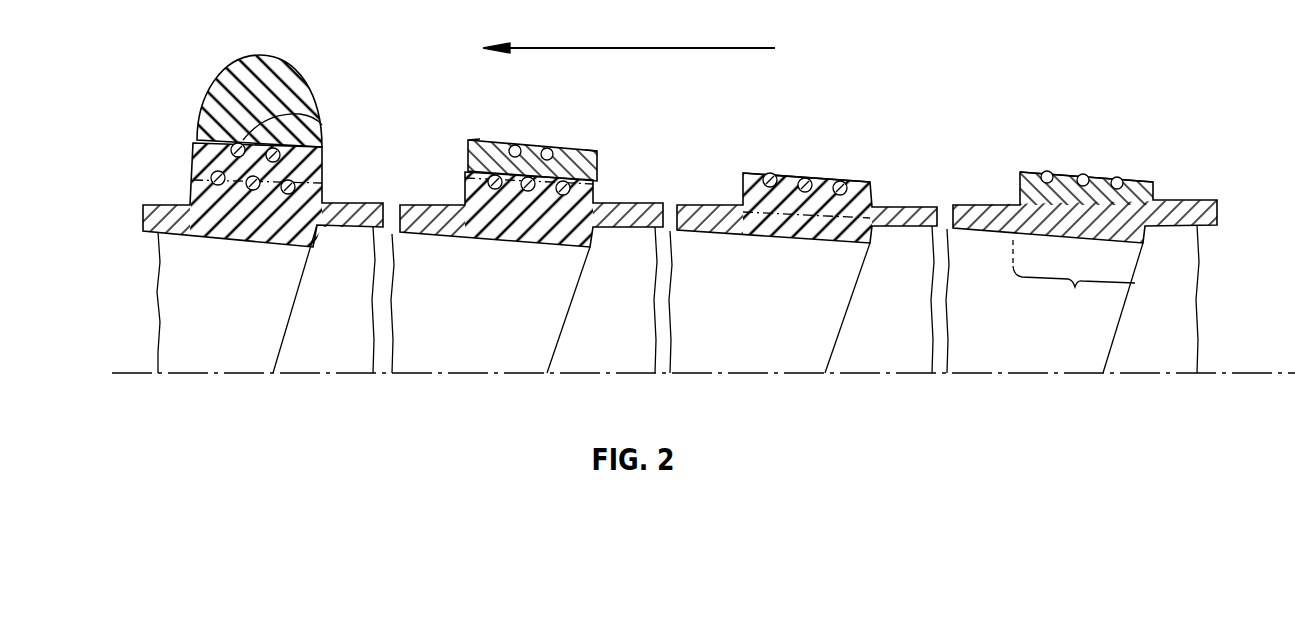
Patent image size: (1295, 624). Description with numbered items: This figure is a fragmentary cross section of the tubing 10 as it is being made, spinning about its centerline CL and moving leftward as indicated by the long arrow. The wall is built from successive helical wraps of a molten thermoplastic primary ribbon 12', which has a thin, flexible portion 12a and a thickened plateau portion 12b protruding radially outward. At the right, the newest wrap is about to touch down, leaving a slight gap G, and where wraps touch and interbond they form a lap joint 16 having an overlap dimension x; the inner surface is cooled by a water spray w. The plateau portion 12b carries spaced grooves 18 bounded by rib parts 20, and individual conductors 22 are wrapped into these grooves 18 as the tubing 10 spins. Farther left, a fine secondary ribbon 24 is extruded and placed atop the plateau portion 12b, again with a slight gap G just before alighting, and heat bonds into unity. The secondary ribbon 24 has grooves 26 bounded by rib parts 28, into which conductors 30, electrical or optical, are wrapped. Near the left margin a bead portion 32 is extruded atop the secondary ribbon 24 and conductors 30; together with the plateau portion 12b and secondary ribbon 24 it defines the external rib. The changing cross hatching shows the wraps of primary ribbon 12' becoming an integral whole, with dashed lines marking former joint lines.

The tubing 10 is at (930, 70).
The primary ribbon 12' is at (712, 194).
The thin portion 12a is at (977, 236).
The plateau portion 12b is at (465, 178).
The lap joint 16 is at (215, 256).
The grooves 18 is at (1049, 172).
The rib part 20 is at (826, 172).
The conductors 22 is at (222, 186).
The secondary ribbon 24 is at (598, 165).
The grooves 26 is at (547, 149).
The rib part 28 is at (482, 140).
The conductors 30 is at (286, 118).
The bead portion 32 is at (215, 93).
The gap G is at (608, 180).
The centerline CL is at (148, 374).
The overlap dimension x is at (1074, 276).
The water spray w is at (990, 303).